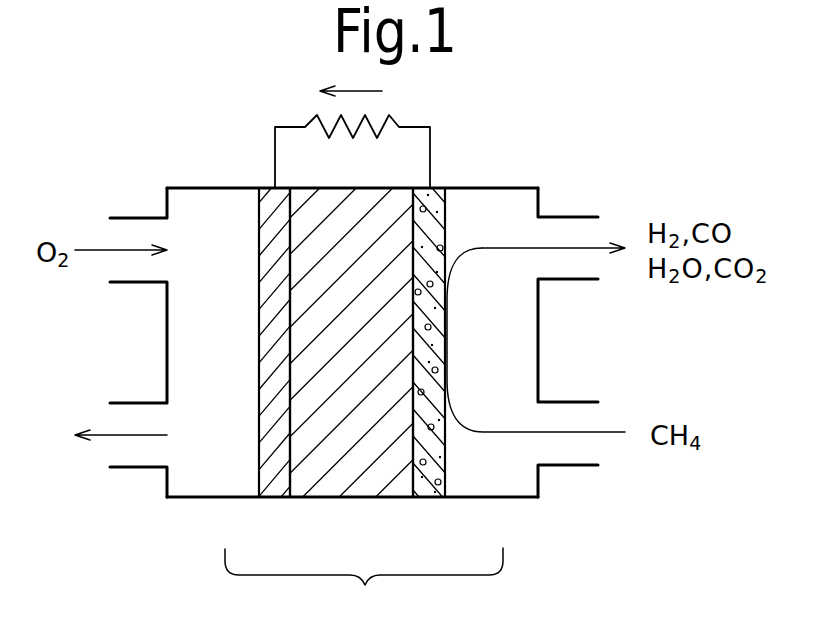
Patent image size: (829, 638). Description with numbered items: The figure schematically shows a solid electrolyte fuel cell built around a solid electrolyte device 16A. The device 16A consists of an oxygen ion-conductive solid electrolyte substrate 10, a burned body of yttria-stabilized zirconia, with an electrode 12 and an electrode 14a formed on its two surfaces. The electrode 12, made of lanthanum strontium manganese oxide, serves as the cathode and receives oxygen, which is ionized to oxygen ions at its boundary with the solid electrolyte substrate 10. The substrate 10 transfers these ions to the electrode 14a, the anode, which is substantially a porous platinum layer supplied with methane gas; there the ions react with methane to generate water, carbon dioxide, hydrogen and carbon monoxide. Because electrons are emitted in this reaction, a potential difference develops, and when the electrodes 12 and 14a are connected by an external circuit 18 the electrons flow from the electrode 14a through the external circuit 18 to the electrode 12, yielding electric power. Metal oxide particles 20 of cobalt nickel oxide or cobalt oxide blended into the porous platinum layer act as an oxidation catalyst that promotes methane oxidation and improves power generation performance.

The solid electrolyte substrate 10 is at (348, 497).
The electrode 12 is at (276, 502).
The electrode 14a is at (430, 503).
The solid electrolyte device 16A is at (364, 582).
The external circuit 18 is at (431, 148).
The metal oxide particles 20 is at (443, 243).